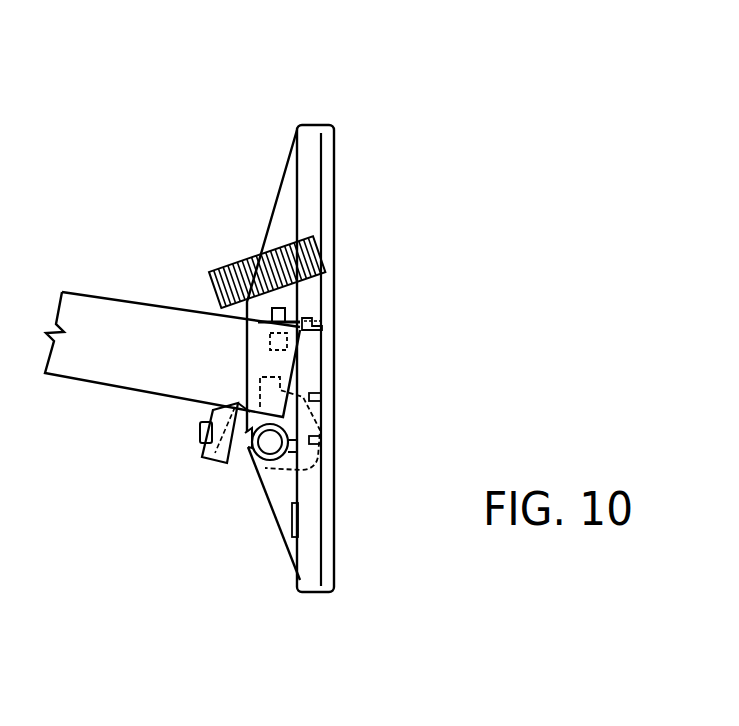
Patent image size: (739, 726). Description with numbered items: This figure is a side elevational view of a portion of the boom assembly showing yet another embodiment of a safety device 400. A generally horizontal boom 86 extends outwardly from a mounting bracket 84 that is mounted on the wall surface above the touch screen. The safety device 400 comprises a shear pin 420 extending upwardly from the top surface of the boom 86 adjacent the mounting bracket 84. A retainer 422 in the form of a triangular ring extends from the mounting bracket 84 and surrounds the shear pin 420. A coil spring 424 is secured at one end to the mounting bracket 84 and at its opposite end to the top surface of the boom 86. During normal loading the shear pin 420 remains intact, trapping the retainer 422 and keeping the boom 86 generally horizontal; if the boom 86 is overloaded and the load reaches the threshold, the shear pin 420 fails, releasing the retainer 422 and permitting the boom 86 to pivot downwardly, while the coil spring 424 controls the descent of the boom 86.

The safety device 400 is at (219, 148).
The mounting bracket 84 is at (313, 207).
The boom 86 is at (110, 297).
The coil spring 424 is at (217, 290).
The retainer 422 is at (294, 313).
The shear pin 420 is at (290, 343).